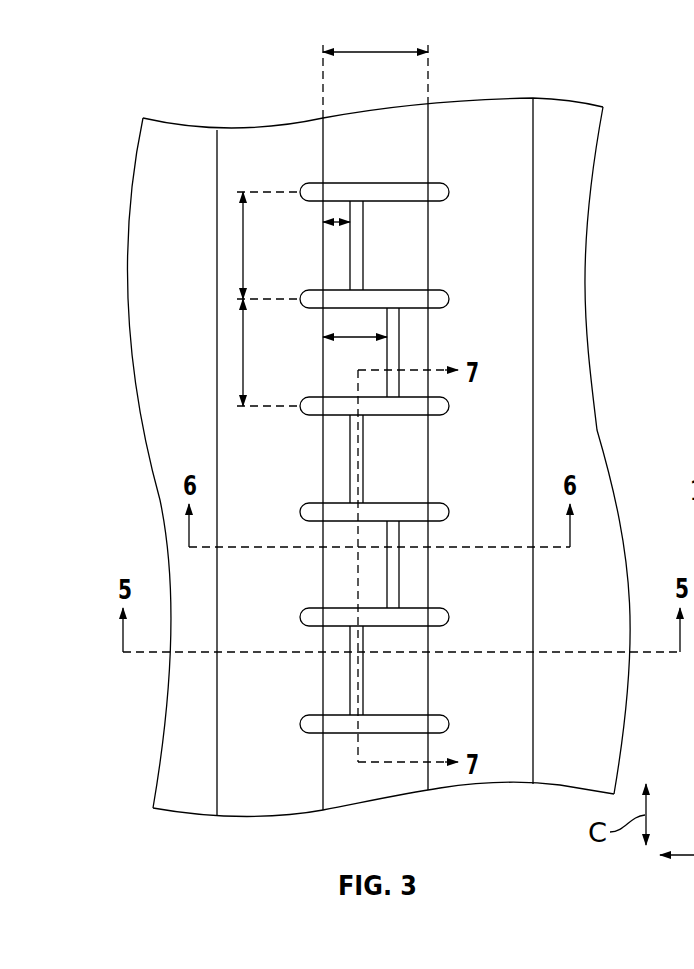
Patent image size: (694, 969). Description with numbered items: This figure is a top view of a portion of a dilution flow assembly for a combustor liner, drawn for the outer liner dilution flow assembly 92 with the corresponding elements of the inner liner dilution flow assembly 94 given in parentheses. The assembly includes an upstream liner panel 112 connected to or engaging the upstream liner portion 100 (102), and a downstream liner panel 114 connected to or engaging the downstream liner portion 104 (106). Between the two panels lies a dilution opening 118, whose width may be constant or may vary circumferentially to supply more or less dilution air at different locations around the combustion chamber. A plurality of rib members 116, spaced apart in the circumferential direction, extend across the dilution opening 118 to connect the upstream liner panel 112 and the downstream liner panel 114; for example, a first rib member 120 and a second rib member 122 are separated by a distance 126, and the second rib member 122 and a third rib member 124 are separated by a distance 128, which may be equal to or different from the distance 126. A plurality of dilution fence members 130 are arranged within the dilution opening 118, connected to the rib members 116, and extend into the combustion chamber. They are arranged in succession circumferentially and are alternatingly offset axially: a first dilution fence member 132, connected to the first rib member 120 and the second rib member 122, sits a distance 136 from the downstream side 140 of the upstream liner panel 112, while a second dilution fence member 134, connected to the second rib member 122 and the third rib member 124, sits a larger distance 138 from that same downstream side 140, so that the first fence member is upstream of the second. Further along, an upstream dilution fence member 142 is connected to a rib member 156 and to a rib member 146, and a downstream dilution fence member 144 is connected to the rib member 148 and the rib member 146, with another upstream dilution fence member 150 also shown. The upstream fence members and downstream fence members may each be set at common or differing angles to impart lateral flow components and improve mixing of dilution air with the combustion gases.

The outer liner dilution flow assembly 92 is at (373, 69).
The inner liner dilution flow assembly 94 is at (497, 90).
The upstream liner portion 100 is at (136, 430).
The upstream liner portion 102 is at (168, 145).
The downstream liner portion 104 is at (614, 416).
The downstream liner portion 106 is at (582, 128).
The upstream liner panel 112 is at (260, 802).
The downstream liner panel 114 is at (440, 773).
The rib members 116 is at (439, 192).
The dilution opening 118 is at (377, 50).
The first rib member 120 is at (421, 137).
The second rib member 122 is at (412, 284).
The third rib member 124 is at (394, 421).
The distance 126 is at (242, 245).
The distance 128 is at (240, 350).
The dilution fence members 130 is at (386, 464).
The first dilution fence member 132 is at (348, 245).
The second dilution fence member 134 is at (402, 380).
The distance 136 is at (338, 220).
The distance 138 is at (347, 343).
The downstream side 140 is at (332, 774).
The upstream dilution fence member 142 is at (368, 665).
The downstream dilution fence member 144 is at (403, 591).
The rib member 146 is at (446, 617).
The rib member 148 is at (446, 512).
The upstream dilution fence member 150 is at (348, 465).
The rib member 156 is at (446, 724).